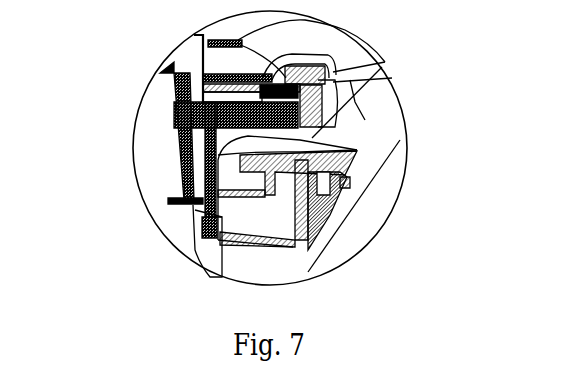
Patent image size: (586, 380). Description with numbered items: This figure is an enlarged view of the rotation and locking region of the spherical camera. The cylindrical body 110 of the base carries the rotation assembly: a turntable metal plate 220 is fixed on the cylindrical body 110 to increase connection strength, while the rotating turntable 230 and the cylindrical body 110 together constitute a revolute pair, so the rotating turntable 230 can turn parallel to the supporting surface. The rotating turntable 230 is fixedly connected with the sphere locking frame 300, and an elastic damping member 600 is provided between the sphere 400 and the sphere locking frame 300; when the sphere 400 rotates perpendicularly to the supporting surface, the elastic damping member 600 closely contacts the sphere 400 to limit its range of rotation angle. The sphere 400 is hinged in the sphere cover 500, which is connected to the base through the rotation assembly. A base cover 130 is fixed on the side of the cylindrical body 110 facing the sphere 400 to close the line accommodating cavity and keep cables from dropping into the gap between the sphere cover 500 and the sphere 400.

The base cover 130 is at (235, 57).
The cylindrical body 110 is at (166, 158).
The rotating turntable 230 is at (195, 212).
The sphere cover 500 is at (203, 247).
The turntable metal plate 220 is at (307, 90).
The sphere locking frame 300 is at (290, 140).
The elastic damping member 600 is at (335, 223).
The sphere 400 is at (383, 181).